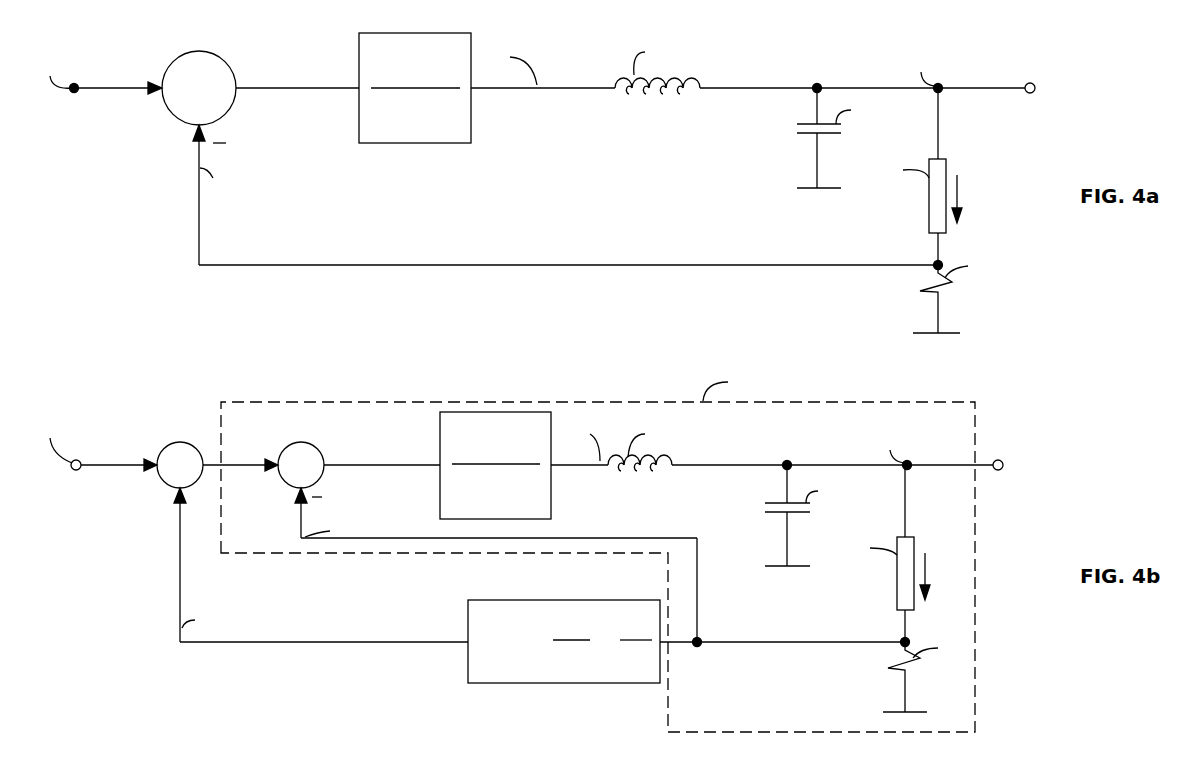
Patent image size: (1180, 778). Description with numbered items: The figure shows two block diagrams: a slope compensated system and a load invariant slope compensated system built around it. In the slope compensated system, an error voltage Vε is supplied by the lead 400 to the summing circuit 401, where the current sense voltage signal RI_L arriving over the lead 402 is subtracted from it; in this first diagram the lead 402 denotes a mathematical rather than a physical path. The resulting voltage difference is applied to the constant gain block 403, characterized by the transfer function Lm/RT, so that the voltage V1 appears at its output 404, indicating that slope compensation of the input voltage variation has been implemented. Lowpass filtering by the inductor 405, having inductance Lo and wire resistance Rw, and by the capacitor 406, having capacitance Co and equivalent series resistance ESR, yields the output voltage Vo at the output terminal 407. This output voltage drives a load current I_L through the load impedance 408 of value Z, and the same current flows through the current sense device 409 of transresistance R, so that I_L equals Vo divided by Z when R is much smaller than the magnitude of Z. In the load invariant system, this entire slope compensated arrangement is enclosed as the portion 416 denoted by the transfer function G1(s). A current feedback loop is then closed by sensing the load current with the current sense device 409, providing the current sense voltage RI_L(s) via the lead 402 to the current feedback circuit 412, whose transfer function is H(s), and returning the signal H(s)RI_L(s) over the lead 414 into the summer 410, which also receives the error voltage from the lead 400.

In FIG. 4a, the lead 400 is at (120, 88).
In FIG. 4b, the lead 400 is at (118, 465).
In FIG. 4a, the summing circuit 401 is at (197, 51).
In FIG. 4b, the summing circuit 401 is at (302, 442).
In FIG. 4a, the lead 402 is at (392, 265).
In FIG. 4b, the lead 402 is at (345, 540).
In FIG. 4a, the constant gain block 403 is at (446, 33).
In FIG. 4b, the constant gain block 403 is at (440, 452).
In FIG. 4a, the output 404 is at (522, 88).
In FIG. 4b, the output 404 is at (567, 467).
In FIG. 4a, the inductor 405 is at (640, 100).
In FIG. 4b, the inductor 405 is at (648, 470).
In FIG. 4a, the capacitor 406 is at (800, 136).
In FIG. 4b, the capacitor 406 is at (770, 515).
In FIG. 4a, the output terminal 407 is at (1031, 83).
In FIG. 4b, the output terminal 407 is at (998, 460).
In FIG. 4a, the load impedance 408 is at (929, 222).
In FIG. 4b, the load impedance 408 is at (897, 600).
In FIG. 4a, the current sense device 409 is at (920, 291).
In FIG. 4b, the current sense device 409 is at (890, 668).
In FIG. 4b, the summer 410 is at (177, 442).
In FIG. 4b, the current feedback circuit 412 is at (533, 600).
In FIG. 4b, the lead 414 is at (182, 582).
In FIG. 4b, the portion of the block diagram 416 is at (660, 388).